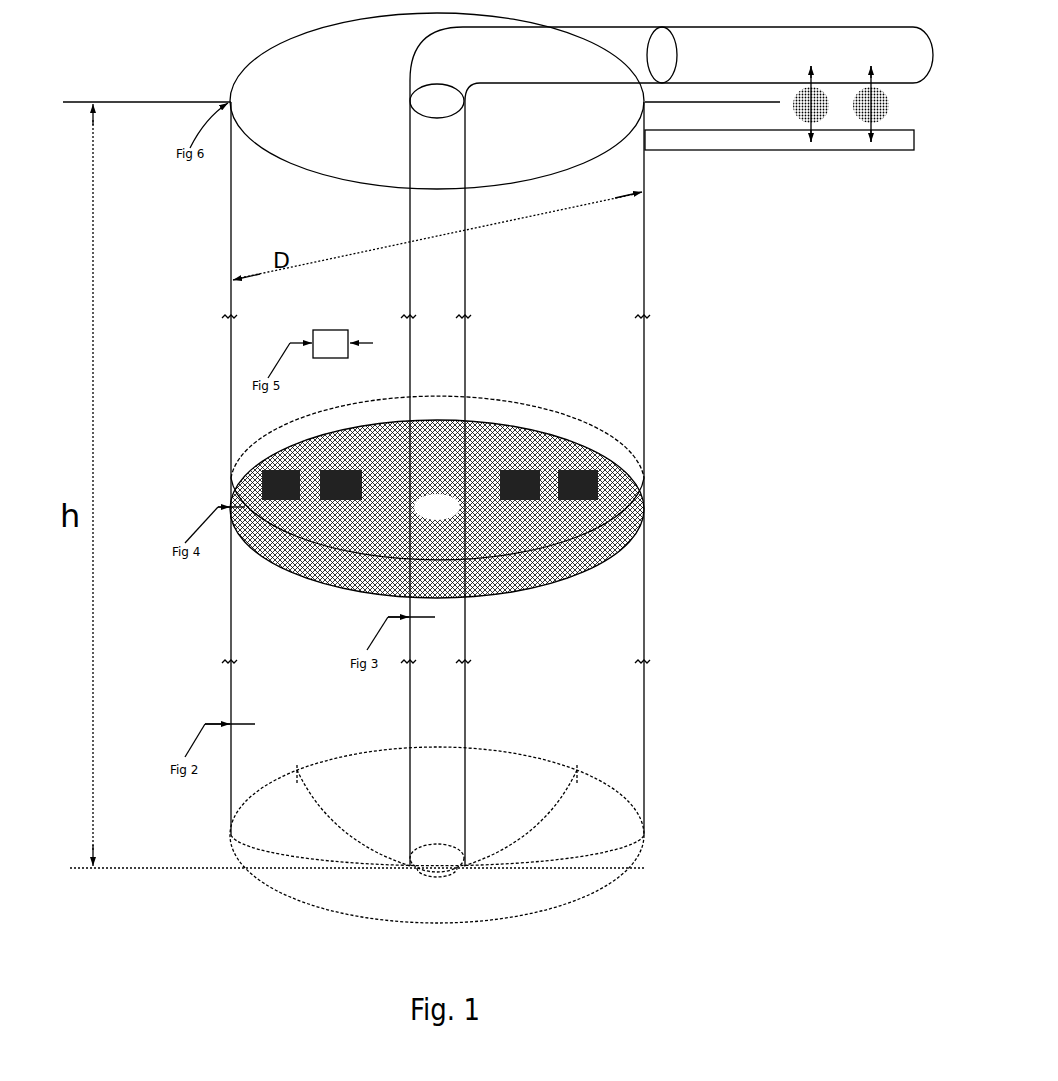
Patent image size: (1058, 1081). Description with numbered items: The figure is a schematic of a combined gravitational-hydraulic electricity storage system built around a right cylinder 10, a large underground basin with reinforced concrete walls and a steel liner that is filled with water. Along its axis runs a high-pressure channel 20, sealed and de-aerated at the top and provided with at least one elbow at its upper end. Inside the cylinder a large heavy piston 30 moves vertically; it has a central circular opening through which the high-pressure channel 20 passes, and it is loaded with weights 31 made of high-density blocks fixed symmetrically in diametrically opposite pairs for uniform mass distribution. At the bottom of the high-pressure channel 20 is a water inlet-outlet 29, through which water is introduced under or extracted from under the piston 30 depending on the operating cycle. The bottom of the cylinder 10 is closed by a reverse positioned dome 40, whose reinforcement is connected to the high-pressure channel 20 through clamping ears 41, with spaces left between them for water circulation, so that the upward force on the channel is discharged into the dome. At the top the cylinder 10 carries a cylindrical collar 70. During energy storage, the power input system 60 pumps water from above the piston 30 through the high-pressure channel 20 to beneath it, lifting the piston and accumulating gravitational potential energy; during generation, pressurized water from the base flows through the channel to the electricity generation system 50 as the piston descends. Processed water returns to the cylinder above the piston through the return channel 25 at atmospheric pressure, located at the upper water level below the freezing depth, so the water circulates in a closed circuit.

The right cylinder 10 is at (605, 245).
The high-pressure channel 20 is at (440, 281).
The return channel 25 is at (775, 143).
The water inlet-outlet 29 is at (445, 858).
The piston 30 is at (547, 449).
The weights 31 is at (585, 487).
The reverse positioned dome 40 is at (587, 855).
The clamping ears 41 is at (418, 875).
The electricity generation system 50 is at (824, 124).
The power input system 60 is at (882, 124).
The cylindrical collar 70 is at (142, 105).